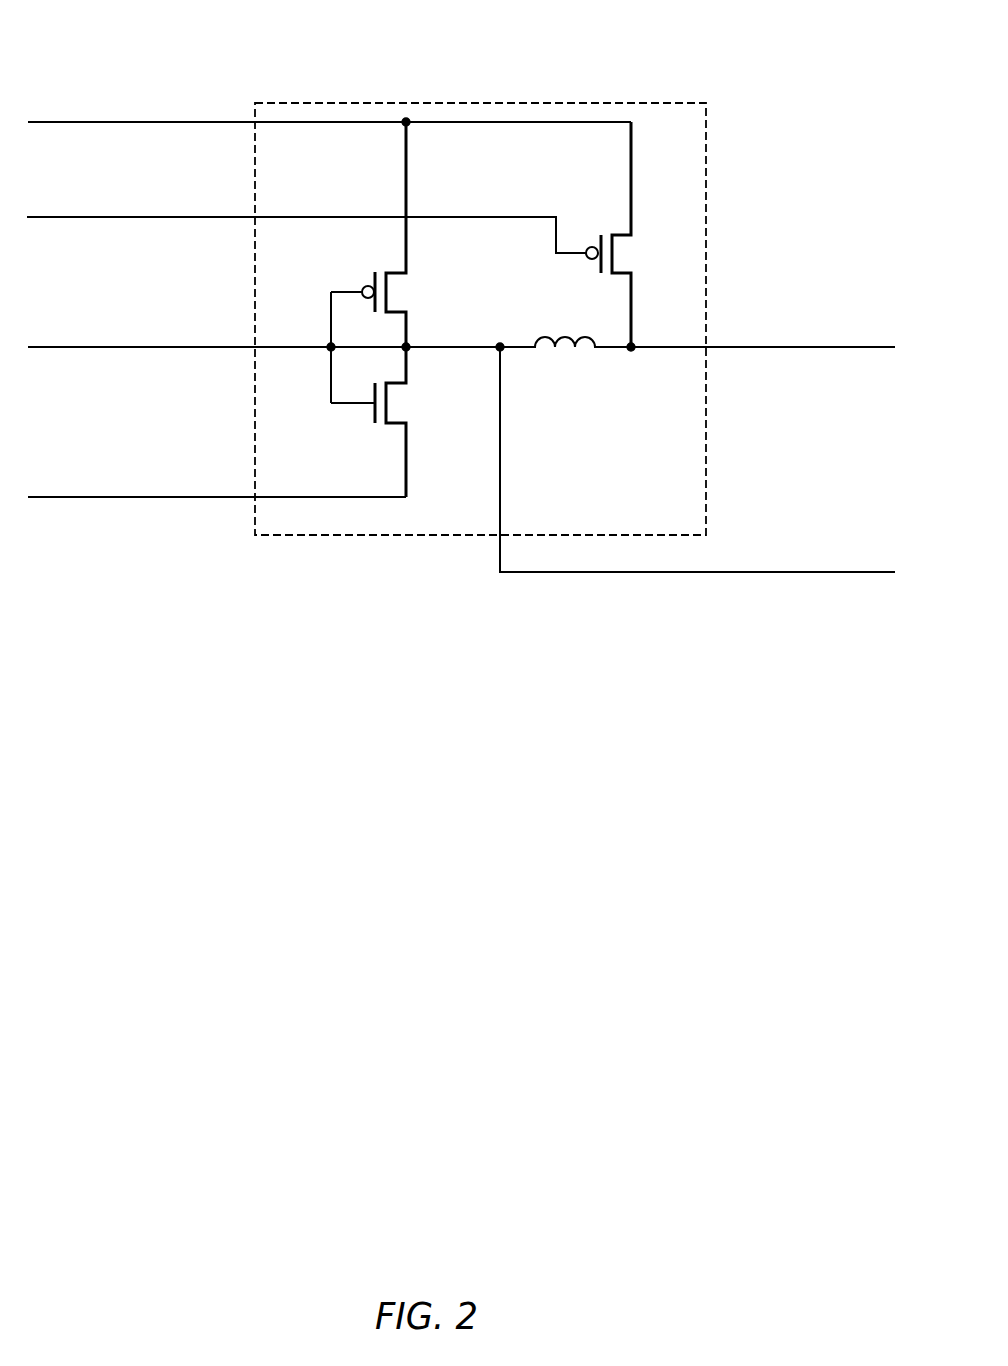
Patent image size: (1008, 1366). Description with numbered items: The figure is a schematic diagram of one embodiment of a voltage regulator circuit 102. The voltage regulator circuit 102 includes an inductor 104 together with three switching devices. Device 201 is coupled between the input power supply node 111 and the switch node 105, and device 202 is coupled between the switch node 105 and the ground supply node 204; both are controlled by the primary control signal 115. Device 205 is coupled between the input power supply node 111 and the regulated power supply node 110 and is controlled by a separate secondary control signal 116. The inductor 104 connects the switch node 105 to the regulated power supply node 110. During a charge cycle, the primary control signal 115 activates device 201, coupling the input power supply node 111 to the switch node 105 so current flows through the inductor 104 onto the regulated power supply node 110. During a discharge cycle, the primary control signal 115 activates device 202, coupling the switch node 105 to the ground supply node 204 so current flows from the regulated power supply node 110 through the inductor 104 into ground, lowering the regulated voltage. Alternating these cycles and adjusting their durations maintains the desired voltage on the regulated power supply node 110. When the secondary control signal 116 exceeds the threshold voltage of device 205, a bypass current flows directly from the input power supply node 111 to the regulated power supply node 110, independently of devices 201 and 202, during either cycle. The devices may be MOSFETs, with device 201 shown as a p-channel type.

The voltage regulator circuit 102 is at (531, 103).
The inductor 104 is at (565, 352).
The switch node 105 is at (697, 472).
The regulated power supply node 110 is at (763, 321).
The input power supply node 111 is at (329, 109).
The primary control signal 115 is at (266, 347).
The secondary control signal 116 is at (306, 209).
The device 201 is at (398, 292).
The device 202 is at (398, 403).
The ground supply node 204 is at (217, 485).
The device 205 is at (625, 250).